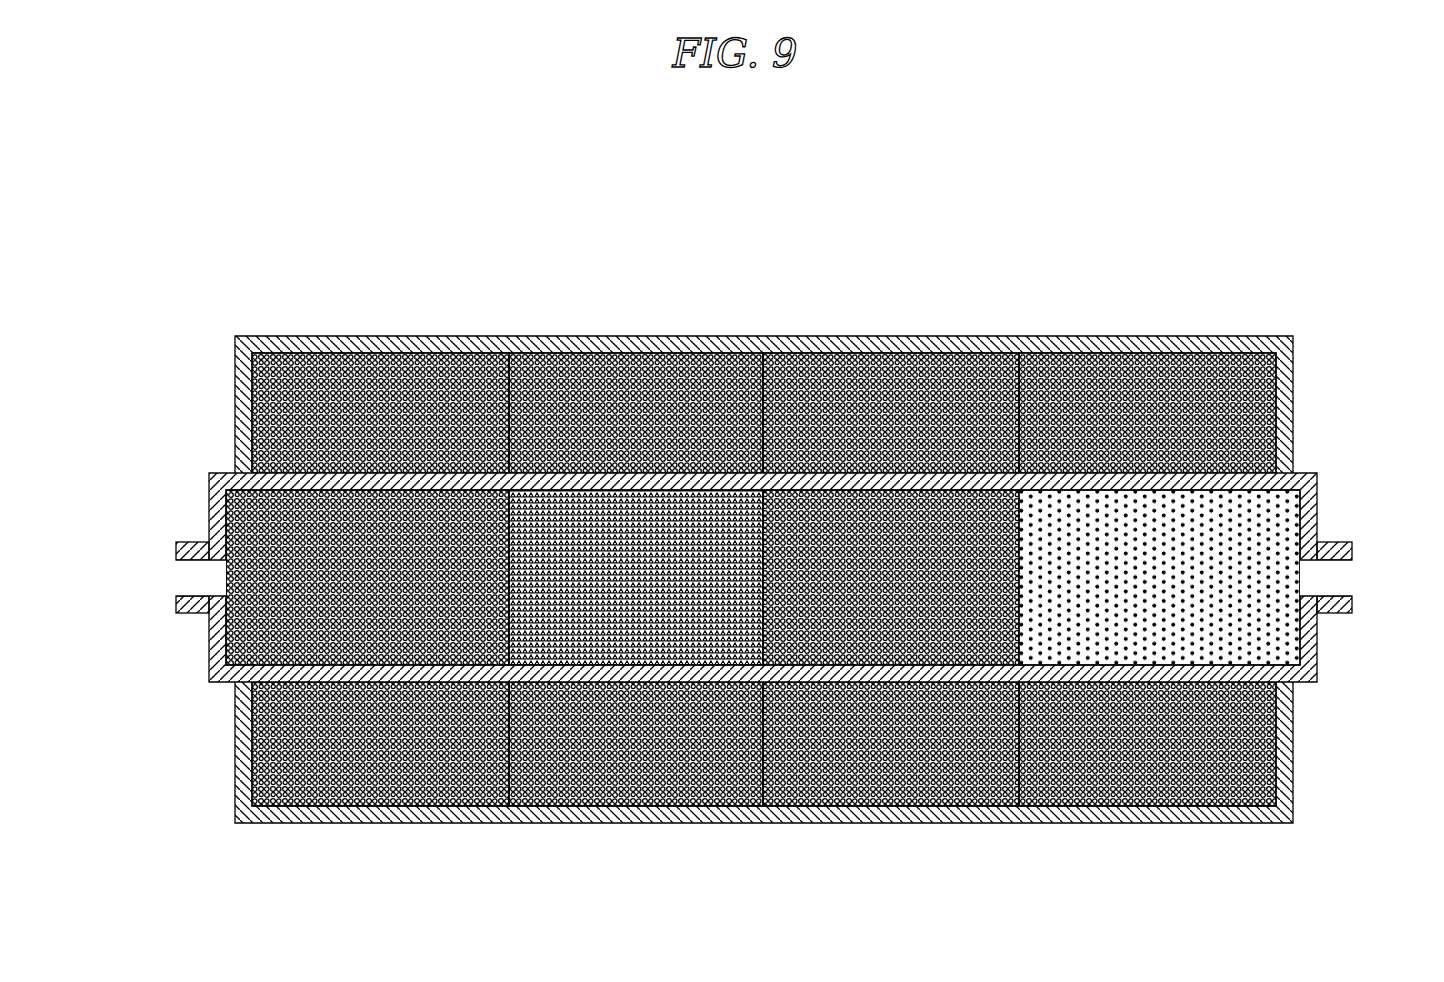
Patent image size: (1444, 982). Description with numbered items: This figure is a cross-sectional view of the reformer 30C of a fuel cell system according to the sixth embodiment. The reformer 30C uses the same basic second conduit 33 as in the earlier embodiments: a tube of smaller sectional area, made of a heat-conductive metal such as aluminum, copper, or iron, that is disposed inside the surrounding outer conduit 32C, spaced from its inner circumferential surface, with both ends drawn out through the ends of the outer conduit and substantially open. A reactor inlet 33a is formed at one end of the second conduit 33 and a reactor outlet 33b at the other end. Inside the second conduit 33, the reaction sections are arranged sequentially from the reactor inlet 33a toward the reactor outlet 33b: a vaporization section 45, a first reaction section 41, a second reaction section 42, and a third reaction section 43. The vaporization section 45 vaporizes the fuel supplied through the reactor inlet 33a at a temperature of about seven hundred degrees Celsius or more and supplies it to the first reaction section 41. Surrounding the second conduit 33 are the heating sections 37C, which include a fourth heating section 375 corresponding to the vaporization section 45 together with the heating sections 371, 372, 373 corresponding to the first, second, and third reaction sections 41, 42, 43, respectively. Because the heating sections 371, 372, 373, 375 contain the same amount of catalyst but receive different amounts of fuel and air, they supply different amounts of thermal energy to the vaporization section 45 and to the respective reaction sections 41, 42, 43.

The reformer 30C is at (758, 533).
The housing 32C is at (1283, 353).
The heating sections 37C is at (700, 544).
The fourth heating section 375 is at (383, 358).
The heating section 371 is at (640, 358).
The heating section 372 is at (895, 358).
The heating section 373 is at (1151, 358).
The second conduit 33 is at (1278, 462).
The reactor inlet 33a is at (176, 576).
The reactor outlet 33b is at (1358, 576).
The vaporization section 45 is at (372, 655).
The first reaction section 41 is at (640, 655).
The second reaction section 42 is at (897, 655).
The third reaction section 43 is at (1140, 655).